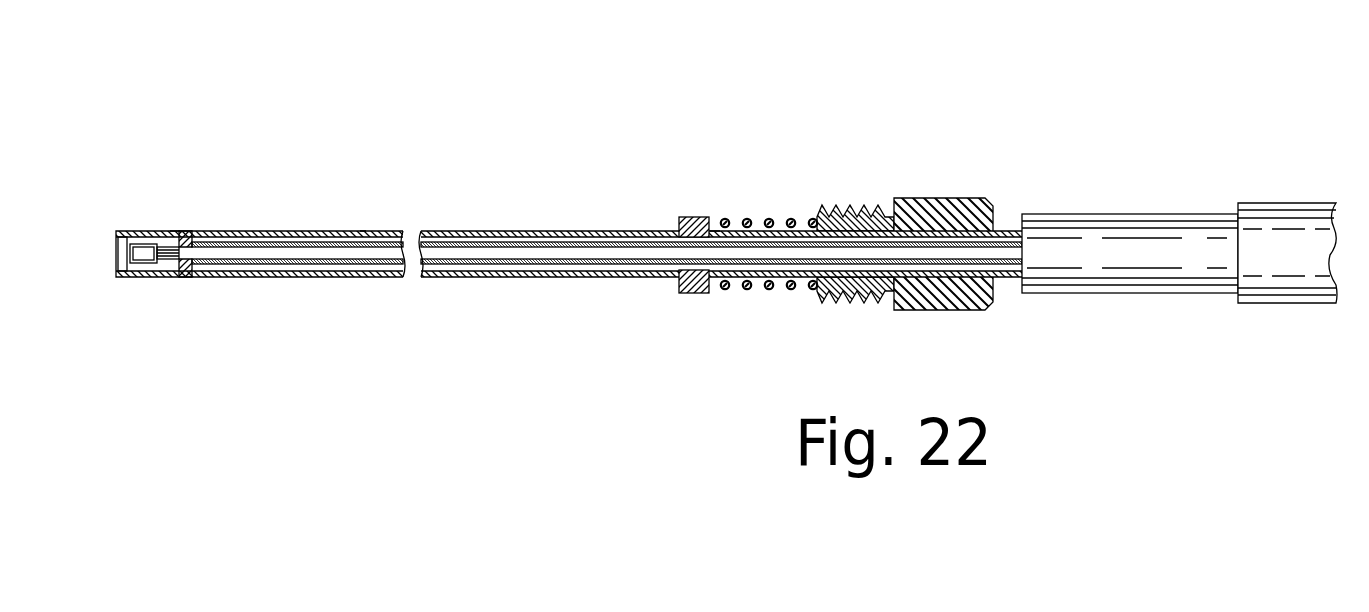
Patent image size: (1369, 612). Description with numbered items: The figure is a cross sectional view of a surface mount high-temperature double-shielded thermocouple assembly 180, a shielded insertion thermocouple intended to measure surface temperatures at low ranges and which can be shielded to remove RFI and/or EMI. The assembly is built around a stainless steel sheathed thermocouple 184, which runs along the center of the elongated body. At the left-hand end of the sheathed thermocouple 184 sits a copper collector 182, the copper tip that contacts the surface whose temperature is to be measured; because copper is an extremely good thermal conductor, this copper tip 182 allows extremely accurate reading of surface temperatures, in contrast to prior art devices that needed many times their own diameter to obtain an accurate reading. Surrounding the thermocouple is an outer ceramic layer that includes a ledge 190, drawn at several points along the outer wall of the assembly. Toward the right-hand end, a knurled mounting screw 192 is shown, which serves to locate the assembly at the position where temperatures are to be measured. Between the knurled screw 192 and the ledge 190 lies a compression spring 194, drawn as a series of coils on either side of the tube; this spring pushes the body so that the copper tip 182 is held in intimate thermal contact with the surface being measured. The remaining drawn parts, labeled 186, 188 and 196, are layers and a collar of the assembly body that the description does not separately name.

The surface mount high-temperature double-shielded thermocouple assembly 180 is at (1103, 175).
The copper collector 182 is at (145, 231).
The stainless steel sheathed thermocouple 184 is at (205, 255).
The inner tube 186 is at (605, 278).
The outer tube 188 is at (512, 278).
The ledge 190 is at (713, 230).
The knurled mounting screw 192 is at (970, 205).
The compression spring 194 is at (768, 220).
The collar 196 is at (700, 293).